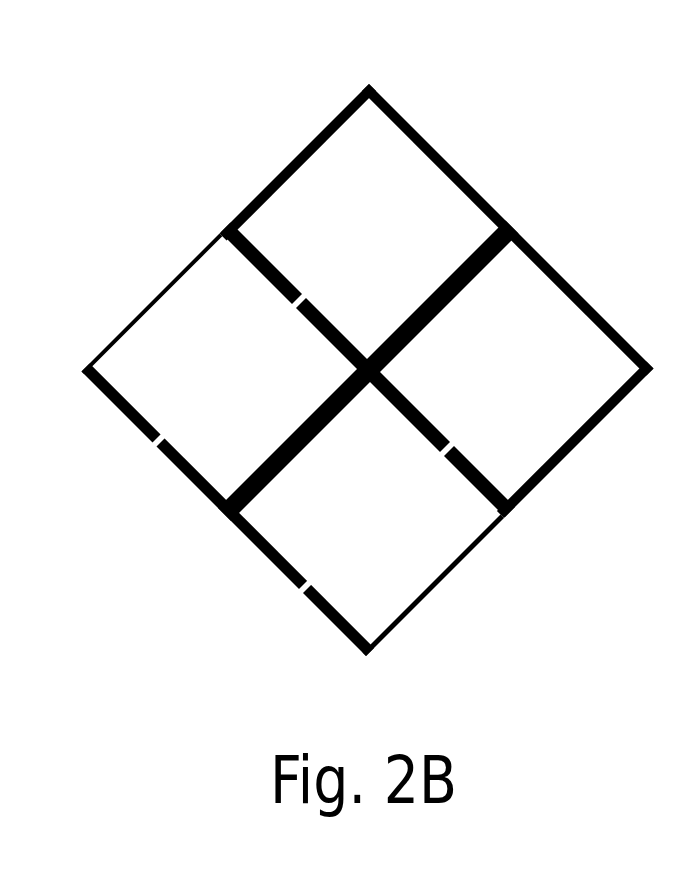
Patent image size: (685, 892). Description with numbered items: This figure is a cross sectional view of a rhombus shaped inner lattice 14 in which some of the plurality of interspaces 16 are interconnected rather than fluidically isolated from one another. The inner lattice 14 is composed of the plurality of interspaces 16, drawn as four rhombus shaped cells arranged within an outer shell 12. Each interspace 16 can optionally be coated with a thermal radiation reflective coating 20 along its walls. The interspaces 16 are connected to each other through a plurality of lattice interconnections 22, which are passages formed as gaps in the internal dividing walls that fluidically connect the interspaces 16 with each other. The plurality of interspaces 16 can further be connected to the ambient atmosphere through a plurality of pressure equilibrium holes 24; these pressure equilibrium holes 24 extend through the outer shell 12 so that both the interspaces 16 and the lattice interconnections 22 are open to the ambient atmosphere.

The outer shell 12 is at (120, 416).
The inner lattice 14 is at (338, 352).
The interspace 16 is at (439, 443).
The thermal radiation reflective coating 20 is at (508, 301).
The lattice interconnection 22 is at (295, 297).
The pressure equilibrium hole 24 is at (198, 519).